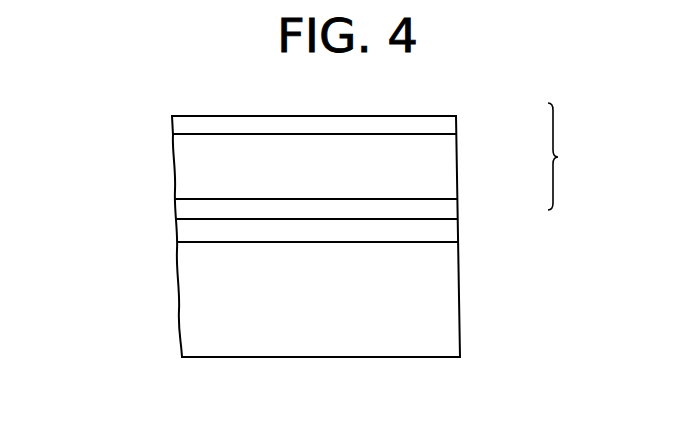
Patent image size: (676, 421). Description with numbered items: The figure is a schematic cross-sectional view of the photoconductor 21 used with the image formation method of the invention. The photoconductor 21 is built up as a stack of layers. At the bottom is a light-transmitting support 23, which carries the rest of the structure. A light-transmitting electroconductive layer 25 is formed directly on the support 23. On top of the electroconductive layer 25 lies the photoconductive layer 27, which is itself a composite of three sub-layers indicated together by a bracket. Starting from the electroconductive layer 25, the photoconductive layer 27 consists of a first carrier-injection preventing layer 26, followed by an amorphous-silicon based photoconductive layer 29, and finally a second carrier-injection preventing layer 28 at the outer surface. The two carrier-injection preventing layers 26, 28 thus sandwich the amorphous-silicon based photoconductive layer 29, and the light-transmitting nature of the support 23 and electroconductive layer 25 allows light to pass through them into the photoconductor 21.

The photoconductor 21 is at (159, 181).
The light-transmitting support 23 is at (450, 295).
The light-transmitting electroconductive layer 25 is at (452, 233).
The first carrier-injection preventing layer 26 is at (448, 208).
The photoconductive layer 27 is at (578, 156).
The second carrier-injection preventing layer 28 is at (445, 128).
The amorphous-silicon based photoconductive layer 29 is at (445, 168).